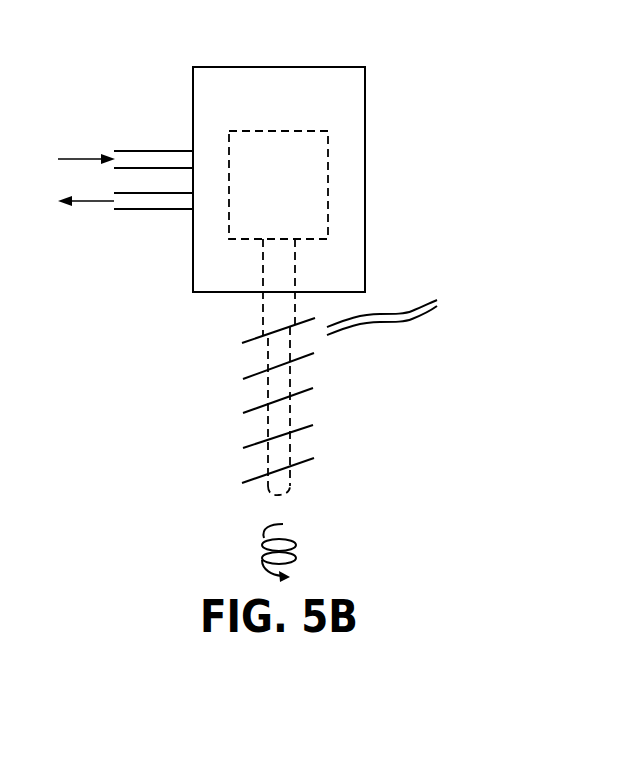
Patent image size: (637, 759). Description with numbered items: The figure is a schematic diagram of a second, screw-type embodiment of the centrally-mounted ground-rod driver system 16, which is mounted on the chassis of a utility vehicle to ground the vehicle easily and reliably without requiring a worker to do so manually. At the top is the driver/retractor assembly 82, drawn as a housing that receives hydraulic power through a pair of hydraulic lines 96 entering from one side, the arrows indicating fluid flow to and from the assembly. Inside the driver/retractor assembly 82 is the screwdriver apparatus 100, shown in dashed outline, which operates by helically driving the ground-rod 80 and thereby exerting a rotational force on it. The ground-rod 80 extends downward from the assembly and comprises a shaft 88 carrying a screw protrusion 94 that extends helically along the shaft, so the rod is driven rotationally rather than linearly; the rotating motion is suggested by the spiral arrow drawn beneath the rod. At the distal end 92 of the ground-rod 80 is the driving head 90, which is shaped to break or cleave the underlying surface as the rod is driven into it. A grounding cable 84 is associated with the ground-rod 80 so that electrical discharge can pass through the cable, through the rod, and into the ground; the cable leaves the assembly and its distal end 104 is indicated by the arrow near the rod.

The centrally-mounted ground-rod driver system 16 is at (201, 46).
The driver/retractor assembly 82 is at (365, 112).
The screwdriver apparatus 100 is at (277, 130).
The hydraulic lines 96 is at (155, 150).
The ground-rod 80 is at (265, 388).
The screw protrusion 94 is at (252, 340).
The distal end 104 is at (317, 343).
The shaft 88 is at (292, 457).
The driving head 90 is at (289, 484).
The grounding cable 84 is at (410, 326).
The distal end 92 is at (265, 501).